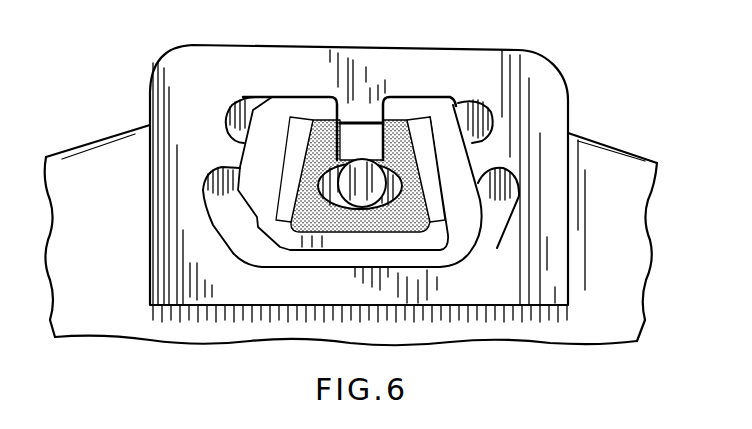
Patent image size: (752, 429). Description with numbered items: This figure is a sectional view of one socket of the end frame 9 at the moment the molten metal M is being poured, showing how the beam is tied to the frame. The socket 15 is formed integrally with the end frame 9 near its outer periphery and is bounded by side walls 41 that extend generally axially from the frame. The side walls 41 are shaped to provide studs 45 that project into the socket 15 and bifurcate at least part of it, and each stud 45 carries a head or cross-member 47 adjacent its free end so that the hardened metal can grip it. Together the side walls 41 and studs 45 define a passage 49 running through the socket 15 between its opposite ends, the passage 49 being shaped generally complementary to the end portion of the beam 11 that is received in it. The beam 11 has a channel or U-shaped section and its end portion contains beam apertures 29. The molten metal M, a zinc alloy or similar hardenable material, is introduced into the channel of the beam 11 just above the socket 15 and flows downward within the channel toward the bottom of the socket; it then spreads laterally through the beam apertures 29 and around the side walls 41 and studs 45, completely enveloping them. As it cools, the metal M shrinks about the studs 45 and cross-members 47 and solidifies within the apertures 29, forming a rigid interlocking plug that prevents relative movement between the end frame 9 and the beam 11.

The end frame 9 is at (613, 151).
The socket 15 is at (568, 72).
The passage 49 is at (465, 203).
The molten metal M is at (352, 218).
The beam 11 is at (300, 247).
The side wall 41 is at (473, 140).
The stud 45 is at (358, 153).
The cross-member 47 is at (432, 190).
The beam aperture 29 is at (290, 144).